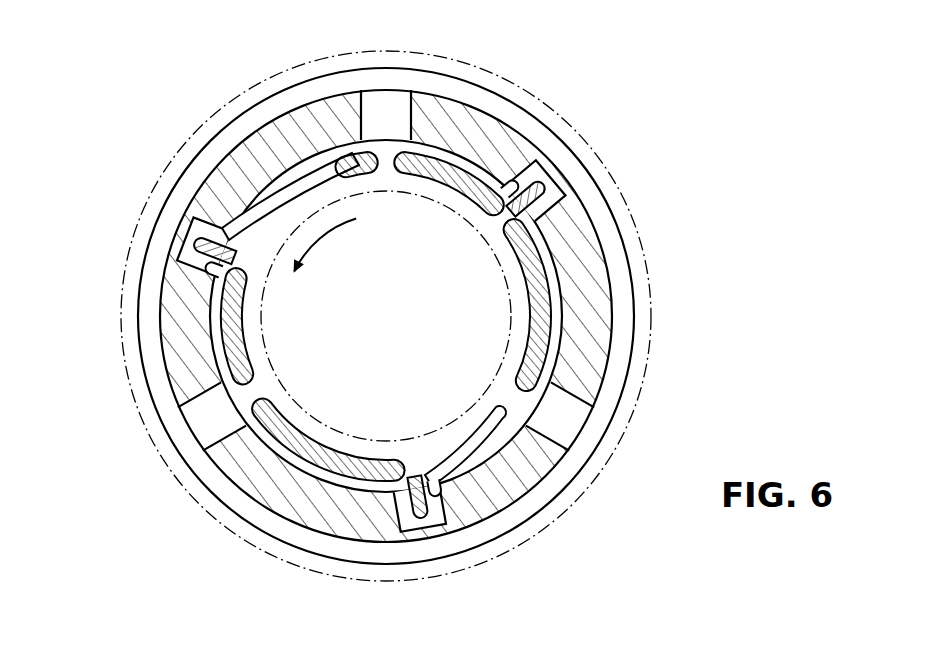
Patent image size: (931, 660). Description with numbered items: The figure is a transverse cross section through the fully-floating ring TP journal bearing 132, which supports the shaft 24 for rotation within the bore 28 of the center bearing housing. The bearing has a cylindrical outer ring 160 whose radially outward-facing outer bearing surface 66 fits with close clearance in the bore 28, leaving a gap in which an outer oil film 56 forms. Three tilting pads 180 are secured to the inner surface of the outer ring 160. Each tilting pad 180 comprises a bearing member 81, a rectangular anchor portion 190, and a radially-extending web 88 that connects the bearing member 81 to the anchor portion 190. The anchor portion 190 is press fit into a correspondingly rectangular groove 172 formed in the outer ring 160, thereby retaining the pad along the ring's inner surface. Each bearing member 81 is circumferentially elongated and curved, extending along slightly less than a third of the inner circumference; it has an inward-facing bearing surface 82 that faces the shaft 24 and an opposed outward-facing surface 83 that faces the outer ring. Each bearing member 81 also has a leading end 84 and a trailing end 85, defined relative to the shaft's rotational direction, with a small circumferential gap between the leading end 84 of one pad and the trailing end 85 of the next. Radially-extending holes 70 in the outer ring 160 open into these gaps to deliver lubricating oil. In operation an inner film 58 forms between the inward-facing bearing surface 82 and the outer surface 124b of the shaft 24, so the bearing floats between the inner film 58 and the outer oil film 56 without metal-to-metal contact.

The fully-floating ring TP journal bearing 132 is at (131, 117).
The cylindrical outer ring 160 is at (248, 146).
The leading end 84 is at (354, 141).
The radially-extending holes 70 is at (393, 103).
The outer bearing surface 66 is at (452, 118).
The radially-extending web 88 is at (511, 172).
The groove 172 is at (562, 192).
The anchor portion 190 is at (577, 206).
The inner film 58 is at (566, 272).
The tilting pads 180 is at (545, 318).
The shaft 24 is at (570, 351).
The outer surface of the shaft 124b is at (548, 462).
The bearing member 81 is at (437, 180).
The bore 28 is at (140, 432).
The outer oil film 56 is at (163, 442).
The trailing end 85 is at (230, 400).
The outward-facing surface 83 is at (245, 202).
The inward-facing bearing surface 82 is at (300, 200).